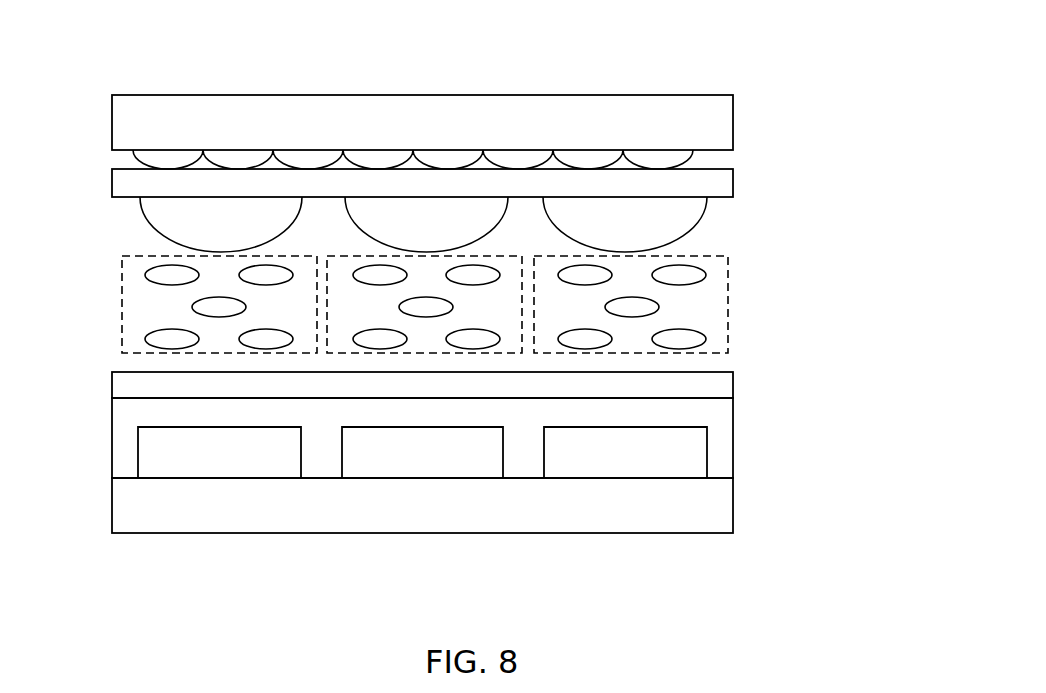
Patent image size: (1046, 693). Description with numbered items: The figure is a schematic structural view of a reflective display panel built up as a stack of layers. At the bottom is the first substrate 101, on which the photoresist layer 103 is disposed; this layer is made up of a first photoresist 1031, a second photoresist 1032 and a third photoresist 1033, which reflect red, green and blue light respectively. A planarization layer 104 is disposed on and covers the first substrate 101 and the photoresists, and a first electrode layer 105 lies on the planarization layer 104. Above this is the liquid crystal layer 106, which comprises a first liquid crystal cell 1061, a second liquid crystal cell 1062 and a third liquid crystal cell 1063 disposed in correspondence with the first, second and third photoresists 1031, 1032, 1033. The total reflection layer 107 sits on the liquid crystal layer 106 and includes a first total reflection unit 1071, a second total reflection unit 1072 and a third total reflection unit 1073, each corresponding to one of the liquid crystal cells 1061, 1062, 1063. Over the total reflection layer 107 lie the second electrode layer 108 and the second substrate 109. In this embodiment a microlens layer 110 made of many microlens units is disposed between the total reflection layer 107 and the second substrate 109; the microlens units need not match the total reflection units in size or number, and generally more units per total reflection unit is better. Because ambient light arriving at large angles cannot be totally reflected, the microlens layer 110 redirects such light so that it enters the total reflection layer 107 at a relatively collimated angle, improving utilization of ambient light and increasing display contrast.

The first substrate 101 is at (733, 517).
The photoresist layer 103 is at (502, 410).
The first photoresist 1031 is at (152, 452).
The second photoresist 1032 is at (422, 455).
The third photoresist 1033 is at (707, 463).
The planarization layer 104 is at (733, 438).
The first electrode layer 105 is at (733, 378).
The liquid crystal layer 106 is at (502, 352).
The first liquid crystal cell 1061 is at (138, 323).
The second liquid crystal cell 1062 is at (343, 315).
The third liquid crystal cell 1063 is at (700, 304).
The total reflection layer 107 is at (502, 316).
The first total reflection unit 1071 is at (160, 206).
The second total reflection unit 1072 is at (421, 218).
The third total reflection unit 1073 is at (680, 217).
The second electrode layer 108 is at (733, 181).
The second substrate 109 is at (733, 125).
The microlens layer 110 is at (693, 158).